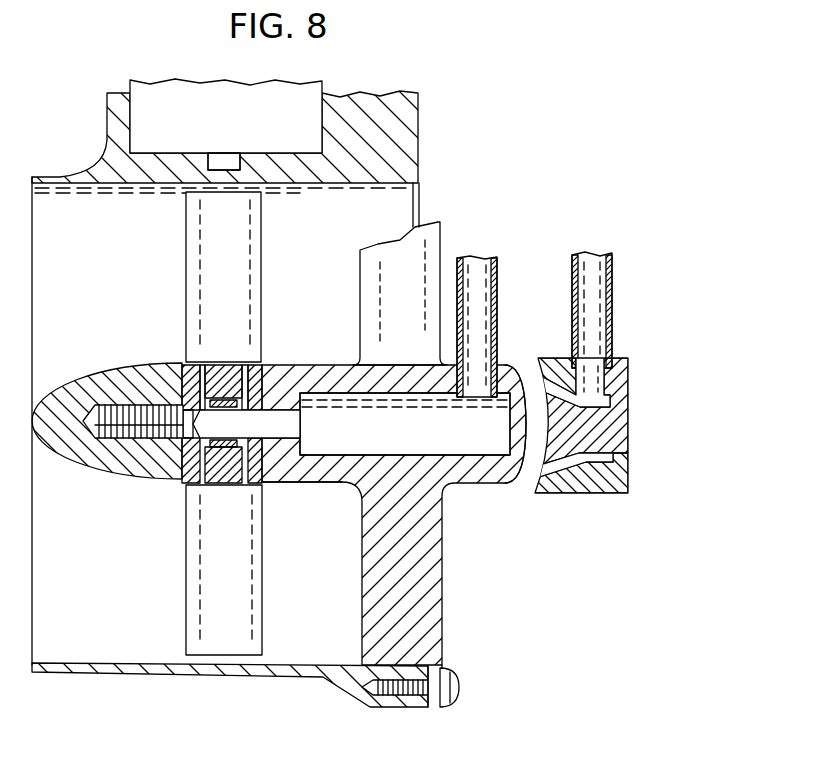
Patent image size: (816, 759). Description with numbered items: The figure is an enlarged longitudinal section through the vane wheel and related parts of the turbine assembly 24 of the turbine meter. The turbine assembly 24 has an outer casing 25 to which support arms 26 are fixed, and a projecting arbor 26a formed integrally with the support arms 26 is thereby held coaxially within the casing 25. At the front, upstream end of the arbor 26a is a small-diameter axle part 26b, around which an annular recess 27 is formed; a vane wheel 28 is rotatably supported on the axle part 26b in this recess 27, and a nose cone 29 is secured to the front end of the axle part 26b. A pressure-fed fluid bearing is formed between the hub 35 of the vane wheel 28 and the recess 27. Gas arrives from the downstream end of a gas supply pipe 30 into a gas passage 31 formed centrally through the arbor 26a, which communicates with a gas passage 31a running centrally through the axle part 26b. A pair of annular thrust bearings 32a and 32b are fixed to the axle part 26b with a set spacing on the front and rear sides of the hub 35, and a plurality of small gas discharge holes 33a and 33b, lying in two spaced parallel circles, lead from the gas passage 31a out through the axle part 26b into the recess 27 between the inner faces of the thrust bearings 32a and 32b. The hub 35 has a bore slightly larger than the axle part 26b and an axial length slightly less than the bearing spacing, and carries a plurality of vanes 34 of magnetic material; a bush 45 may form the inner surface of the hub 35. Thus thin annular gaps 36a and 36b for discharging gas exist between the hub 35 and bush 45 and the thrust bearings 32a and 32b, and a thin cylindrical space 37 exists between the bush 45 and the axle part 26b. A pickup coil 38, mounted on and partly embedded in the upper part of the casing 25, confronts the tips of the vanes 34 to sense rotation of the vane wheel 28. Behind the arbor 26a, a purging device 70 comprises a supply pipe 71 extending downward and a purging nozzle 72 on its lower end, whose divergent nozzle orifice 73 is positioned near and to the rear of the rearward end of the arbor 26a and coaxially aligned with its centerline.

The turbine assembly 24 is at (441, 225).
The outer casing 25 is at (128, 676).
The support arms 26 is at (443, 563).
The arbor 26a is at (319, 485).
The axle part 26b is at (183, 441).
The annular recess 27 is at (183, 488).
The vane wheel 28 is at (263, 206).
The nose cone 29 is at (92, 383).
The gas supply pipe 30 is at (498, 275).
The gas passage 31 is at (470, 458).
The gas passage 31a is at (302, 425).
The annular thrust bearing 32a is at (181, 371).
The annular thrust bearing 32b is at (261, 369).
The gas discharge holes 33a is at (214, 448).
The gas discharge holes 33b is at (242, 418).
The vanes 34 is at (263, 238).
The hub 35 is at (231, 397).
The annular gap 36a is at (203, 371).
The annular gap 36b is at (249, 372).
The cylindrical space 37 is at (223, 448).
The pickup coil 38 is at (181, 88).
The bush 45 is at (214, 364).
The purging device 70 is at (623, 358).
The supply pipe 71 is at (598, 259).
The purging nozzle 72 is at (617, 495).
The nozzle orifice 73 is at (542, 373).